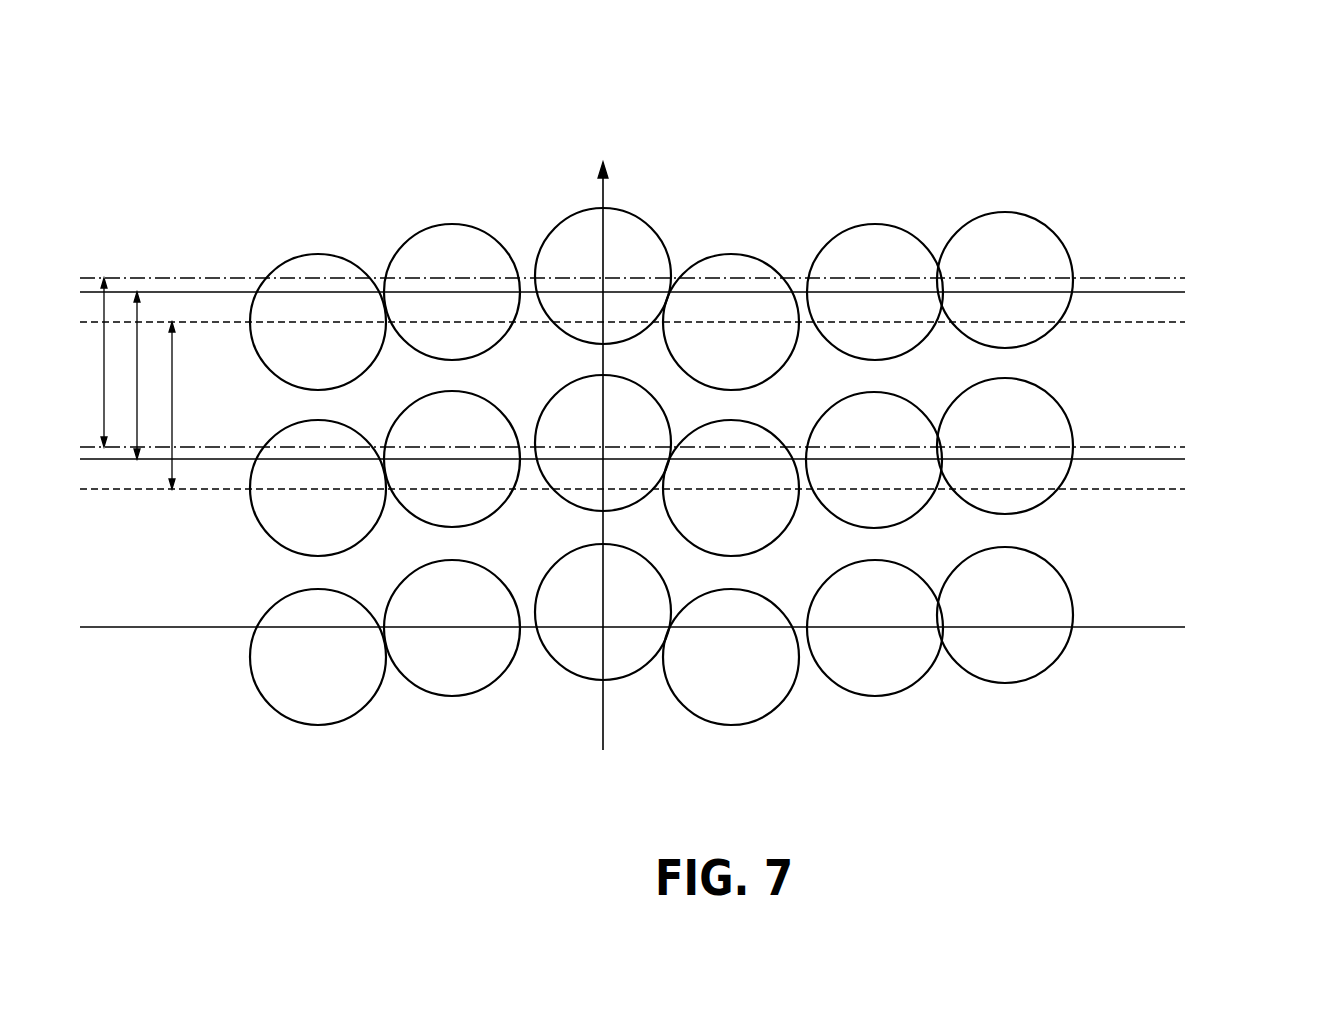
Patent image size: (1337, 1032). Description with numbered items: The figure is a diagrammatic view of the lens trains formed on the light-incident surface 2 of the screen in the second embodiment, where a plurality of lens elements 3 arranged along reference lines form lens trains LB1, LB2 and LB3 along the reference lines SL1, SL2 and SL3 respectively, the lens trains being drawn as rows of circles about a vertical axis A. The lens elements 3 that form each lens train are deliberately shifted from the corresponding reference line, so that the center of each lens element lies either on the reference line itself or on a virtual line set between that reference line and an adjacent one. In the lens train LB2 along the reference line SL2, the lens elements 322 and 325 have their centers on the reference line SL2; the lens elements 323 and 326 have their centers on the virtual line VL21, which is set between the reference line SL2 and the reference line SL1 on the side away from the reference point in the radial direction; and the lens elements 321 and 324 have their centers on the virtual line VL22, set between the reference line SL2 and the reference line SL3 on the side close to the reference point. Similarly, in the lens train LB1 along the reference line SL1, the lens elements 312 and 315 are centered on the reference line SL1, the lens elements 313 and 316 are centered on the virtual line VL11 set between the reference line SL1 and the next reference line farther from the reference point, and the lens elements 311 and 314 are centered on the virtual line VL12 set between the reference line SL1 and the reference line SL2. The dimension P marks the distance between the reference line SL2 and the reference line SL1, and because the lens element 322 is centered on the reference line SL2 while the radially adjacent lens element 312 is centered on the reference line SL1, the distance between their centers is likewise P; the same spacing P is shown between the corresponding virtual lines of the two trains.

The light-incident surface 2 is at (1148, 118).
The lens elements 3 is at (275, 600).
The lens element 311 is at (295, 258).
The lens element 312 is at (452, 224).
The lens element 313 is at (637, 217).
The lens element 314 is at (733, 254).
The lens element 315 is at (875, 224).
The lens element 316 is at (1005, 212).
The lens element 321 is at (320, 420).
The lens element 322 is at (432, 392).
The lens element 323 is at (667, 420).
The lens element 324 is at (779, 440).
The lens element 325 is at (880, 393).
The lens element 326 is at (1010, 377).
The axis A is at (605, 718).
The distance P is at (146, 383).
The lens train LB1 is at (1115, 193).
The lens train LB2 is at (1135, 362).
The lens train LB3 is at (1090, 566).
The reference line SL1 is at (1170, 292).
The reference line SL2 is at (1170, 459).
The reference line SL3 is at (1170, 627).
The virtual line VL11 is at (1132, 278).
The virtual line VL12 is at (1163, 322).
The virtual line VL21 is at (1130, 447).
The virtual line VL22 is at (1160, 489).